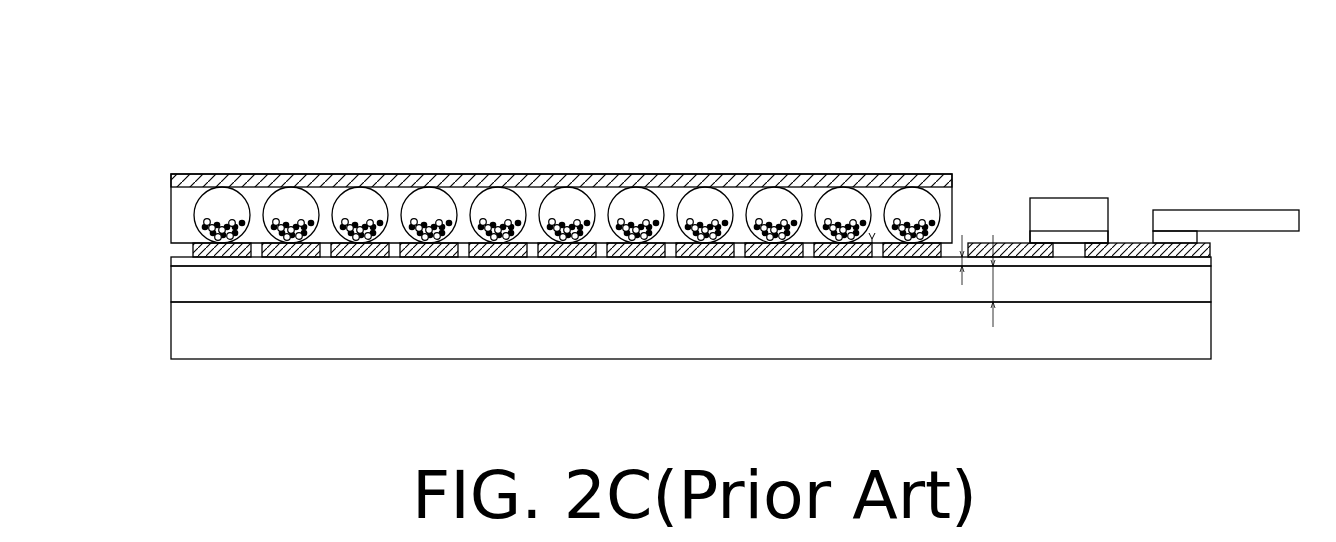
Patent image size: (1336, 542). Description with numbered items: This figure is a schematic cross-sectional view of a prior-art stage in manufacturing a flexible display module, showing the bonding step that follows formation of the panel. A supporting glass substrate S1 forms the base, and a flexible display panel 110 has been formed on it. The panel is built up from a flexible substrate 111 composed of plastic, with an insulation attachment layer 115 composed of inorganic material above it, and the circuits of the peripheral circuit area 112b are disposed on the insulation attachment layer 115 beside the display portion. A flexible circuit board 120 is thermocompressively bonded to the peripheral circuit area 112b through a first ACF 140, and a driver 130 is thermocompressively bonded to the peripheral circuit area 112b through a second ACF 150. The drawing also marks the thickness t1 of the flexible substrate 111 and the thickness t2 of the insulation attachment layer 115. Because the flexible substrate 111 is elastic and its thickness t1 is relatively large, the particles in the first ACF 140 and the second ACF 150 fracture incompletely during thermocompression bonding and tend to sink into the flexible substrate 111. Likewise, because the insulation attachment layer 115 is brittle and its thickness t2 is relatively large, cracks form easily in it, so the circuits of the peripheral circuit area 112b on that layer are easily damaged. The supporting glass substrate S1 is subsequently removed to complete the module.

The flexible display panel 110 is at (150, 221).
The peripheral circuit area 112b is at (1008, 220).
The insulation attachment layer 115 is at (177, 259).
The flexible substrate 111 is at (178, 289).
The supporting glass substrate S1 is at (177, 337).
The driver 130 is at (1083, 202).
The second ACF 150 is at (1071, 237).
The first ACF 140 is at (1176, 237).
The flexible circuit board 120 is at (1242, 221).
The thickness of the flexible substrate t1 is at (993, 280).
The thickness of the insulation attachment layer t2 is at (963, 262).